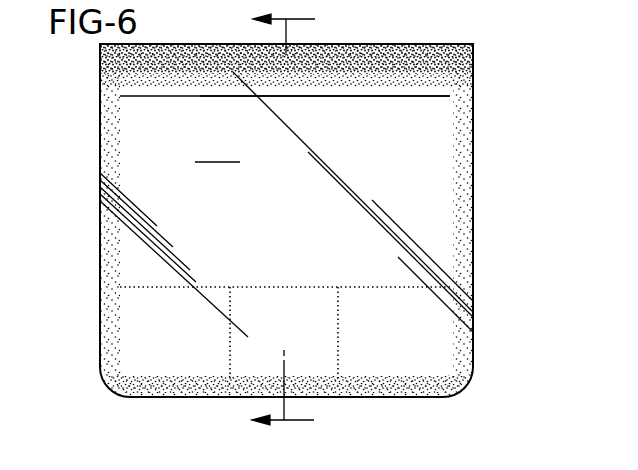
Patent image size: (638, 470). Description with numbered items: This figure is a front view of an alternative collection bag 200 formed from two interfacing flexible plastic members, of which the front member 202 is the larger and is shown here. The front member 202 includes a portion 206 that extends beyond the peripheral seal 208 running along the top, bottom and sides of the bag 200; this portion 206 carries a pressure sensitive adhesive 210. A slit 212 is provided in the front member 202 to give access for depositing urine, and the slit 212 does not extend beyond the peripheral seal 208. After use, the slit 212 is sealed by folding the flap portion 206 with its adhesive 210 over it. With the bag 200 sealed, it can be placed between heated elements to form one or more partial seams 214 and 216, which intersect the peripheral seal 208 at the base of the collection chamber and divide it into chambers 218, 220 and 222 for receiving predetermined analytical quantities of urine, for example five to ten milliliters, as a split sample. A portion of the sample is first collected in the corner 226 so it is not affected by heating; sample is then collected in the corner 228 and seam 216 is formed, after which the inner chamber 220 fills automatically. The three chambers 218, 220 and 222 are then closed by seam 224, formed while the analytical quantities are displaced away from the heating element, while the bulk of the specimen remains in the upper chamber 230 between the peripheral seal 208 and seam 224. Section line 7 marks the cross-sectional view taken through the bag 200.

The collection bag 200 is at (481, 63).
The front member 202 is at (285, 129).
The portion 206 is at (113, 62).
The peripheral seal 208 is at (113, 208).
The pressure sensitive adhesive 210 is at (378, 52).
The slit 212 is at (342, 98).
The partial seam 214 is at (229, 320).
The partial seam 216 is at (338, 313).
The chamber 218 is at (143, 347).
The inner chamber 220 is at (265, 363).
The chamber 222 is at (427, 333).
The seam 224 is at (288, 286).
The corner 226 is at (135, 362).
The corner 228 is at (437, 365).
The upper chamber 230 is at (145, 236).
The section line 7- 7 is at (292, 220).